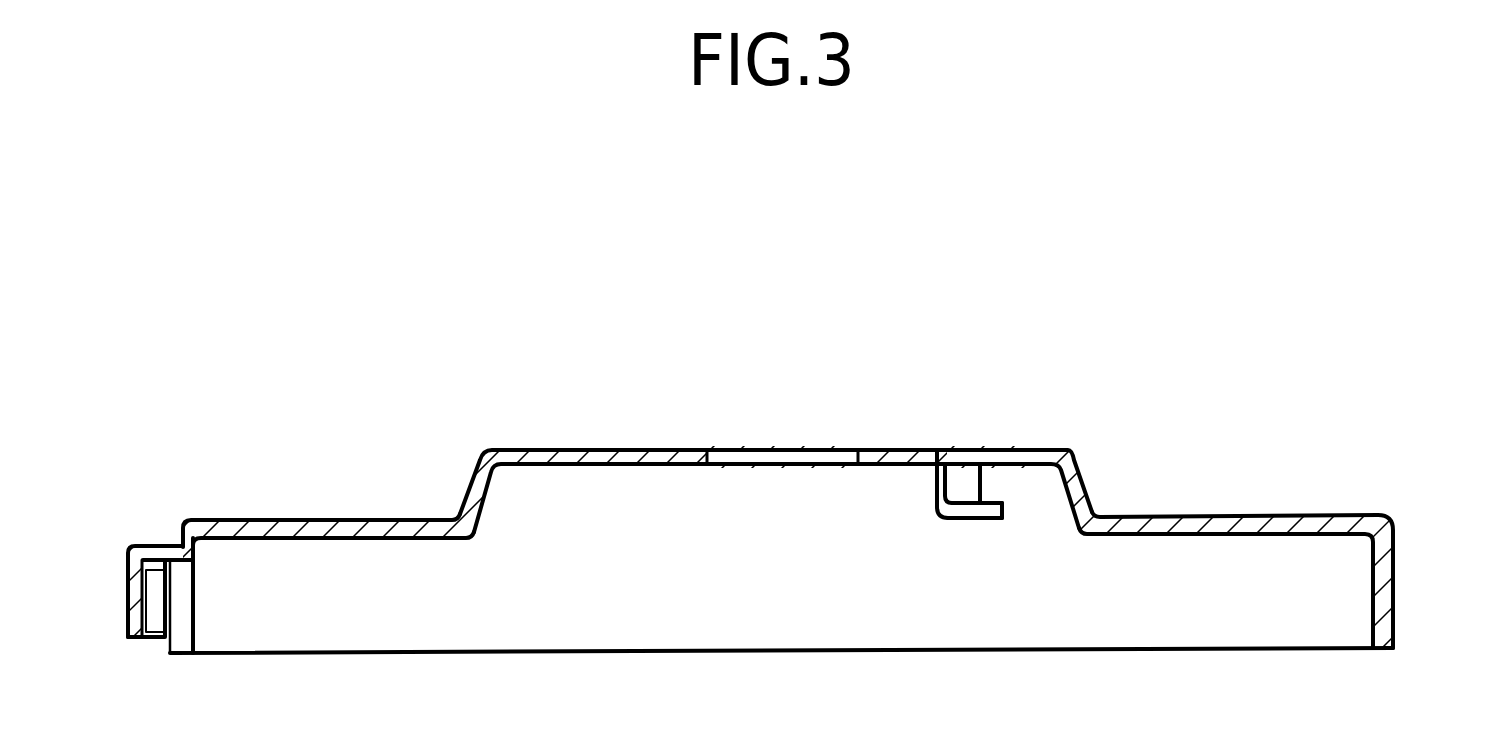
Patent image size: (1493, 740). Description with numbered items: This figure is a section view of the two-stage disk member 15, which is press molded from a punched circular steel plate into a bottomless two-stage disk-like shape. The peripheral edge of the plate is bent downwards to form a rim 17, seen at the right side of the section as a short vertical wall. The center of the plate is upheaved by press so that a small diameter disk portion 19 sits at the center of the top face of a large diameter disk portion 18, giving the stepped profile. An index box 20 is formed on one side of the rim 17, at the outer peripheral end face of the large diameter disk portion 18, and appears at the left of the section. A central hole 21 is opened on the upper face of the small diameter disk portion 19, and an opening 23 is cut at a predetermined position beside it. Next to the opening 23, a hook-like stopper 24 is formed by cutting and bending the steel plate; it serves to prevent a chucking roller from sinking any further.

The two-stage disk member 15 is at (1216, 426).
The rim 17 is at (1396, 605).
The large diameter disk portion 18 is at (1372, 514).
The small diameter disk portion 19 is at (1084, 454).
The index box 20 is at (141, 545).
The central hole 21 is at (710, 449).
The opening 23 is at (958, 449).
The hook-like stopper 24 is at (972, 520).